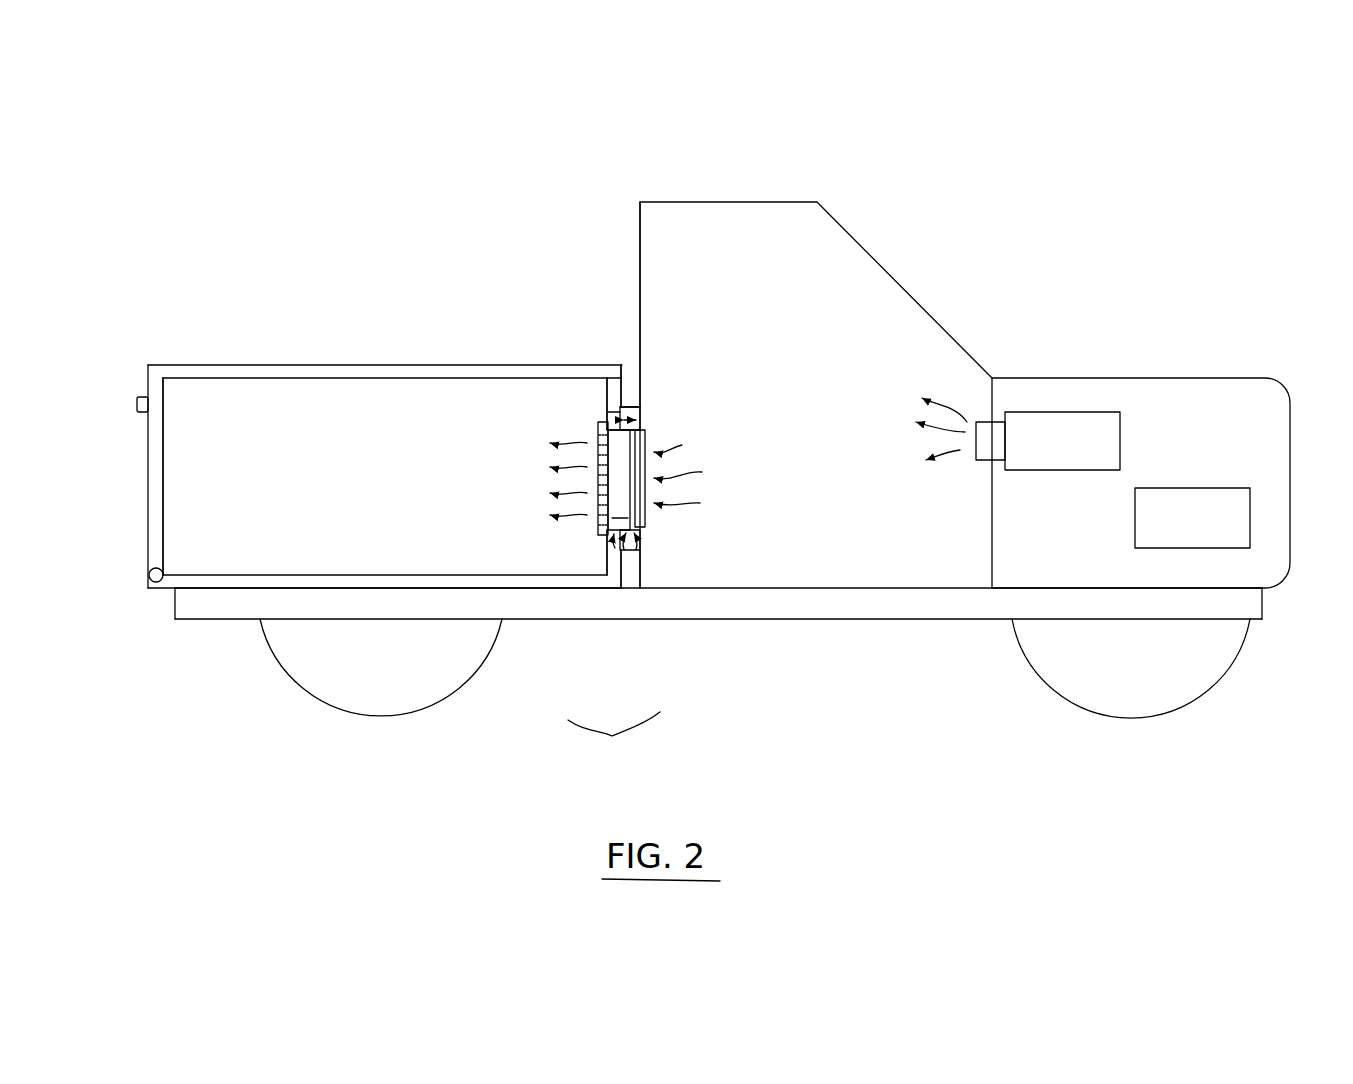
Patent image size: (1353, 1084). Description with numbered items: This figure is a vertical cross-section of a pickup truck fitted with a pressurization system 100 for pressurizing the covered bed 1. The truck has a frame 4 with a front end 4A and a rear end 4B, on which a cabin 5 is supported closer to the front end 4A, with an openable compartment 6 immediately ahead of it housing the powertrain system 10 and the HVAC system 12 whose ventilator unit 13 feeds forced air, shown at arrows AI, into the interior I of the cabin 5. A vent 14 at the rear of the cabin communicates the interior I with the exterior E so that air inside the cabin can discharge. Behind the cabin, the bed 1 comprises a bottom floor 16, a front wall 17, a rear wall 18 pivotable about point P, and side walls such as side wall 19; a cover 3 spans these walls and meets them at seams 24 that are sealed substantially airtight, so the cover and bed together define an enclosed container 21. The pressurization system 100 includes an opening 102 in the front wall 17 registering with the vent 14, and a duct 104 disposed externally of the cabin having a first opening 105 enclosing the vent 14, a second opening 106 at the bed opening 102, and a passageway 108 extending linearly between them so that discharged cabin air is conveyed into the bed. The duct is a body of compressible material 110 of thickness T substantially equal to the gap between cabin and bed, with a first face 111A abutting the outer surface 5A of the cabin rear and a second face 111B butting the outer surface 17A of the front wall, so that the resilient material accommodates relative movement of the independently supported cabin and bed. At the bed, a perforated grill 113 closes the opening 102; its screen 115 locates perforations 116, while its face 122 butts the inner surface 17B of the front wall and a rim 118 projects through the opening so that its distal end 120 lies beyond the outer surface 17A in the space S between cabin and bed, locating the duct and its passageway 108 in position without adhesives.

The bed 1 is at (240, 596).
The cover 3 is at (352, 372).
The frame 4 is at (847, 614).
The front end 4A is at (1265, 598).
The rear end 4B is at (170, 606).
The cabin 5 is at (797, 201).
The outer surface of the rear of the cabin 5A is at (641, 225).
The openable compartment 6 is at (1196, 378).
The powertrain system 10 is at (1130, 534).
The HVAC system 12 is at (1122, 437).
The ventilator unit 13 is at (992, 452).
The vent 14 is at (645, 440).
The bottom floor 16 is at (537, 583).
The front wall 17 is at (617, 390).
The outer surface of the bed at the front wall 17A is at (632, 392).
The inner surface of the bed at the front wall 17B is at (617, 398).
The rear wall 18 is at (152, 500).
The side wall 19 is at (215, 412).
The enclosed container 21 is at (435, 412).
The seams 24 is at (148, 380).
The pressurization system 100 is at (614, 744).
The opening 102 is at (613, 550).
The duct 104 is at (637, 413).
The first opening 105 is at (640, 540).
The second opening 106 is at (630, 590).
The passageway 108 is at (632, 467).
The body of compressible material 110 is at (631, 542).
The first face 111A is at (641, 405).
The second face 111B is at (632, 408).
The perforated grill 113 is at (596, 530).
The screen 115 is at (610, 418).
The perforations 116 is at (600, 443).
The rim 118 is at (620, 518).
The distal end 120 is at (630, 493).
The face of the screen 122 is at (617, 410).
The interior of the cabin I is at (890, 223).
The exterior of the cabin E is at (945, 265).
The space S is at (636, 392).
The thickness T is at (641, 413).
The arrows A1 AI is at (948, 420).
The point P is at (152, 576).